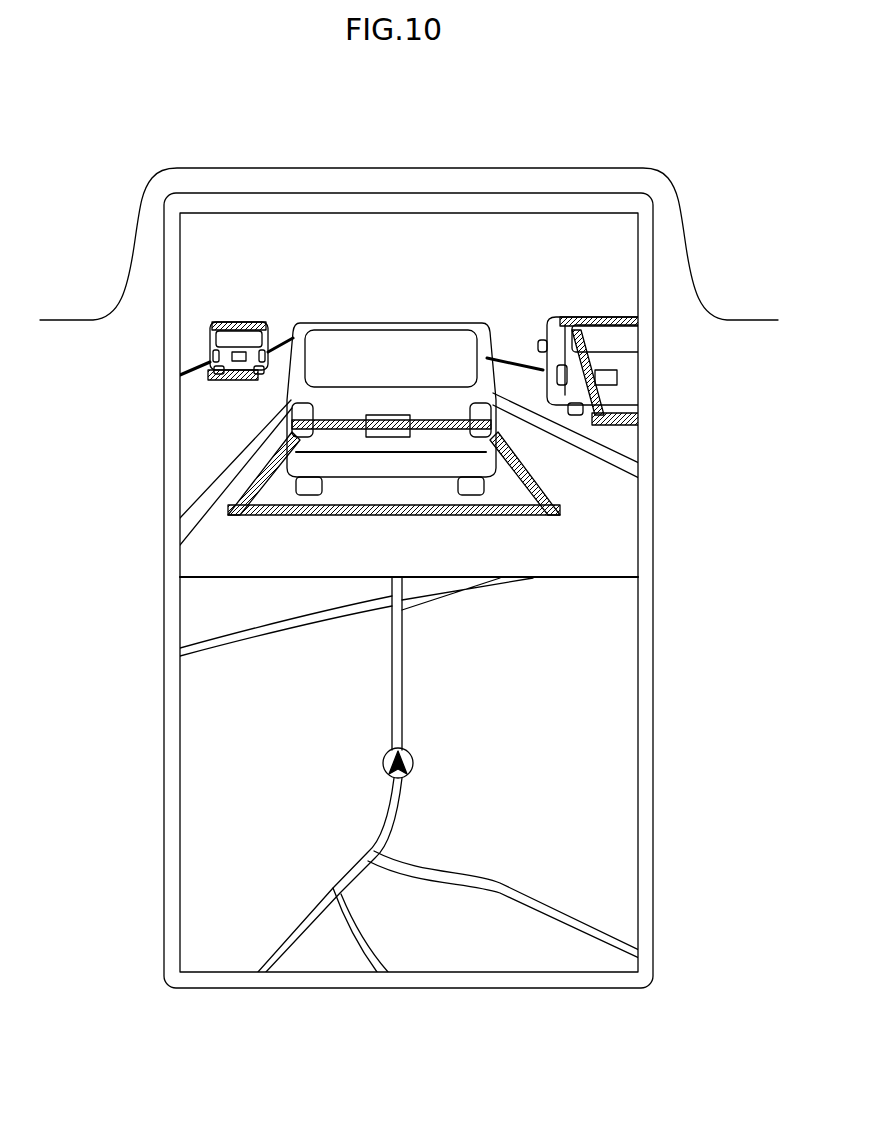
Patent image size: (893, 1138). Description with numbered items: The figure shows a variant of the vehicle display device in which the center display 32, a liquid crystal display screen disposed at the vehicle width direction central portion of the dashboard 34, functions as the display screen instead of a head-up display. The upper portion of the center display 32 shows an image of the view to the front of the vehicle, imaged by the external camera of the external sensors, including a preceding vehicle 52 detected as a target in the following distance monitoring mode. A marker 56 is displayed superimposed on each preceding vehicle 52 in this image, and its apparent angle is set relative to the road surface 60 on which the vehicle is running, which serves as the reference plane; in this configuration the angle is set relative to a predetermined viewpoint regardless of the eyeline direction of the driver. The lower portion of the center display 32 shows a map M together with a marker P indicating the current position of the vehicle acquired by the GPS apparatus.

The dashboard 34 is at (460, 168).
The center display 32 is at (605, 636).
The road surface 60 is at (612, 533).
The preceding vehicle 52 is at (259, 322).
The marker 56 is at (232, 380).
The map M is at (480, 697).
The marker P is at (414, 765).